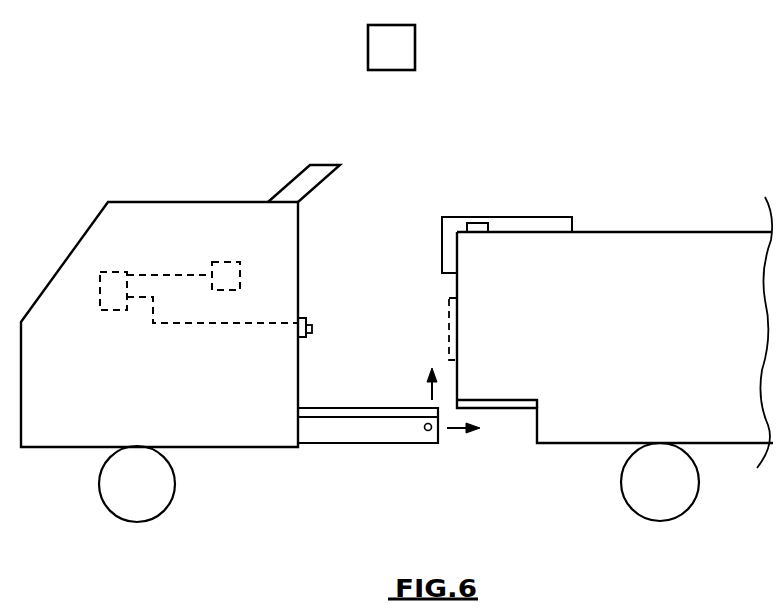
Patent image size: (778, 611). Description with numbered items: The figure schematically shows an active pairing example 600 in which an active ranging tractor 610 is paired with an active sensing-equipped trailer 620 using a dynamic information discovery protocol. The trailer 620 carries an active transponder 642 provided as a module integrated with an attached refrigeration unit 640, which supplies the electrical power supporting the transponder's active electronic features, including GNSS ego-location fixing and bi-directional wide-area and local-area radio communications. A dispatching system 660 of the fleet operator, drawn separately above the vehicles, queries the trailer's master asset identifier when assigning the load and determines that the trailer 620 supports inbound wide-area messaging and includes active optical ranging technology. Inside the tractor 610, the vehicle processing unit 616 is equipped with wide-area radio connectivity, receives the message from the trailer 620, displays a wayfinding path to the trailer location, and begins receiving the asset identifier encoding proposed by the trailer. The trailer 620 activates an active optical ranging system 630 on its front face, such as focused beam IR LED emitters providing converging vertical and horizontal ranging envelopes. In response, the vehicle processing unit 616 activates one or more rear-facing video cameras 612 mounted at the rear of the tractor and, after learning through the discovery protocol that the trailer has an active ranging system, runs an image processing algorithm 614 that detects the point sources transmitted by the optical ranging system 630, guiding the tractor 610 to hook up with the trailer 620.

The active pairing example 600 is at (168, 110).
The tractor 610 is at (188, 202).
The rear-facing video camera 612 is at (305, 318).
The image processing algorithm 614 is at (119, 312).
The vehicle processing unit 616 is at (218, 262).
The trailer 620 is at (645, 232).
The active optical ranging system 630 is at (455, 308).
The refrigeration unit 640 is at (543, 217).
The active transponder 642 is at (472, 223).
The dispatching system 660 is at (416, 48).